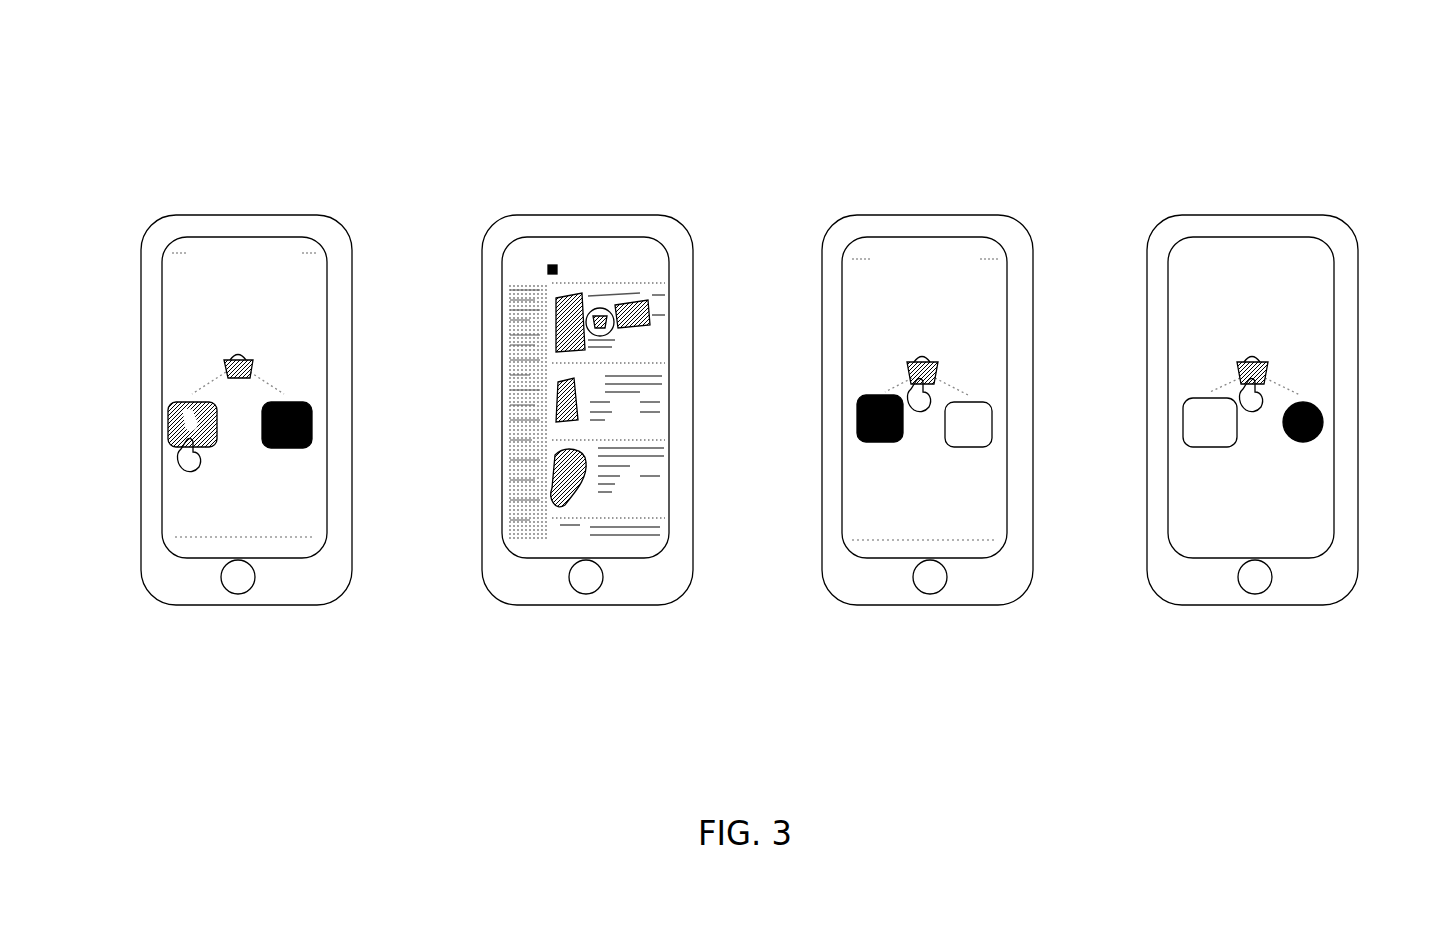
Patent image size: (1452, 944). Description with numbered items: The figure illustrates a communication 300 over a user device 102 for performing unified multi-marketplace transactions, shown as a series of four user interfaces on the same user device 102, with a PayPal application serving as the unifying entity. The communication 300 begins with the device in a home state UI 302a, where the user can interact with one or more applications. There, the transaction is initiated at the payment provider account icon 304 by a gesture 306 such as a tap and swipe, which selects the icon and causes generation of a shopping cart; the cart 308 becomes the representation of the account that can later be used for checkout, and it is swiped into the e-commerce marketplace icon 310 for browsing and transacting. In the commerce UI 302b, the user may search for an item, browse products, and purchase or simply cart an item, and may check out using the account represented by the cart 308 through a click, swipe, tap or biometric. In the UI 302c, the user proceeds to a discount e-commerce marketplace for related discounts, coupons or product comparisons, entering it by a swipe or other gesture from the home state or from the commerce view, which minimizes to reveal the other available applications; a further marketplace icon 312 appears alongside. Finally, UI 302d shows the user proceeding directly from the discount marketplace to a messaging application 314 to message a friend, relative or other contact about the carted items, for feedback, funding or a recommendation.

The communication 300 is at (1215, 100).
The user device 102 is at (352, 272).
The home state UI 302a is at (248, 397).
The commerce UI 302b is at (640, 520).
The UI 302c is at (977, 397).
The UI 302d is at (1298, 397).
The payment provider account icon 304 is at (168, 420).
The gesture 306 is at (173, 466).
The cart 308 is at (220, 350).
The e-commerce marketplace icon 310 is at (312, 406).
The third application icon 312 is at (992, 412).
The messaging application 314 is at (1317, 395).